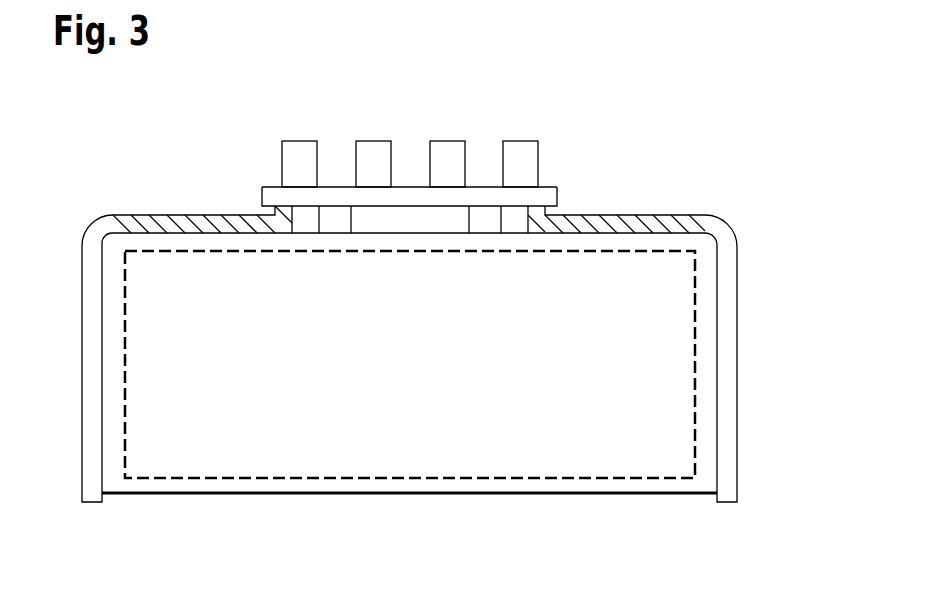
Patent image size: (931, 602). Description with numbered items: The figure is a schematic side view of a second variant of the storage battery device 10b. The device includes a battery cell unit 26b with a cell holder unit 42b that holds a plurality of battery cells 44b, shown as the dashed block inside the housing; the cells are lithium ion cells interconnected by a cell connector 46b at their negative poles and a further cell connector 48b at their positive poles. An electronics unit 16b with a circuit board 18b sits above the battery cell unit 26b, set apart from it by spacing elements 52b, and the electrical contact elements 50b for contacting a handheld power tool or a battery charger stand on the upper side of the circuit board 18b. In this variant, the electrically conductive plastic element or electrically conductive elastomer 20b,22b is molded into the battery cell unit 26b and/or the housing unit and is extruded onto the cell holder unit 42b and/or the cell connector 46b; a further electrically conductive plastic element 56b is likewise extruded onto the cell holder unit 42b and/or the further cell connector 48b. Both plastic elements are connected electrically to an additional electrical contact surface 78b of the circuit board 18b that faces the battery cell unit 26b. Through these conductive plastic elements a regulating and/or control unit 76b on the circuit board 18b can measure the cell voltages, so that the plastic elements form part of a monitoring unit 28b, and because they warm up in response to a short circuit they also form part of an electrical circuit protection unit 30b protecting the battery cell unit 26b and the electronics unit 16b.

The storage battery device 10b is at (530, 90).
The electronics unit 16b is at (283, 120).
The circuit board 18b is at (410, 193).
The electrically conductive plastic element / electrically conductive elastomer 20b,22b is at (618, 222).
The battery cell unit 26b is at (190, 195).
The monitoring unit 28b is at (555, 127).
The electrical circuit protection unit 30b is at (717, 198).
The cell holder unit 42b is at (287, 495).
The battery cells 44b is at (363, 450).
The cell connector 46b is at (728, 490).
The further cell connector 48b is at (94, 490).
The electrical contact elements 50b is at (368, 152).
The spacing elements 52b is at (333, 218).
The further electrically conductive plastic element 56b is at (148, 225).
The regulating and/or control unit 76b is at (332, 193).
The additional electrical contact surface 78b is at (380, 203).